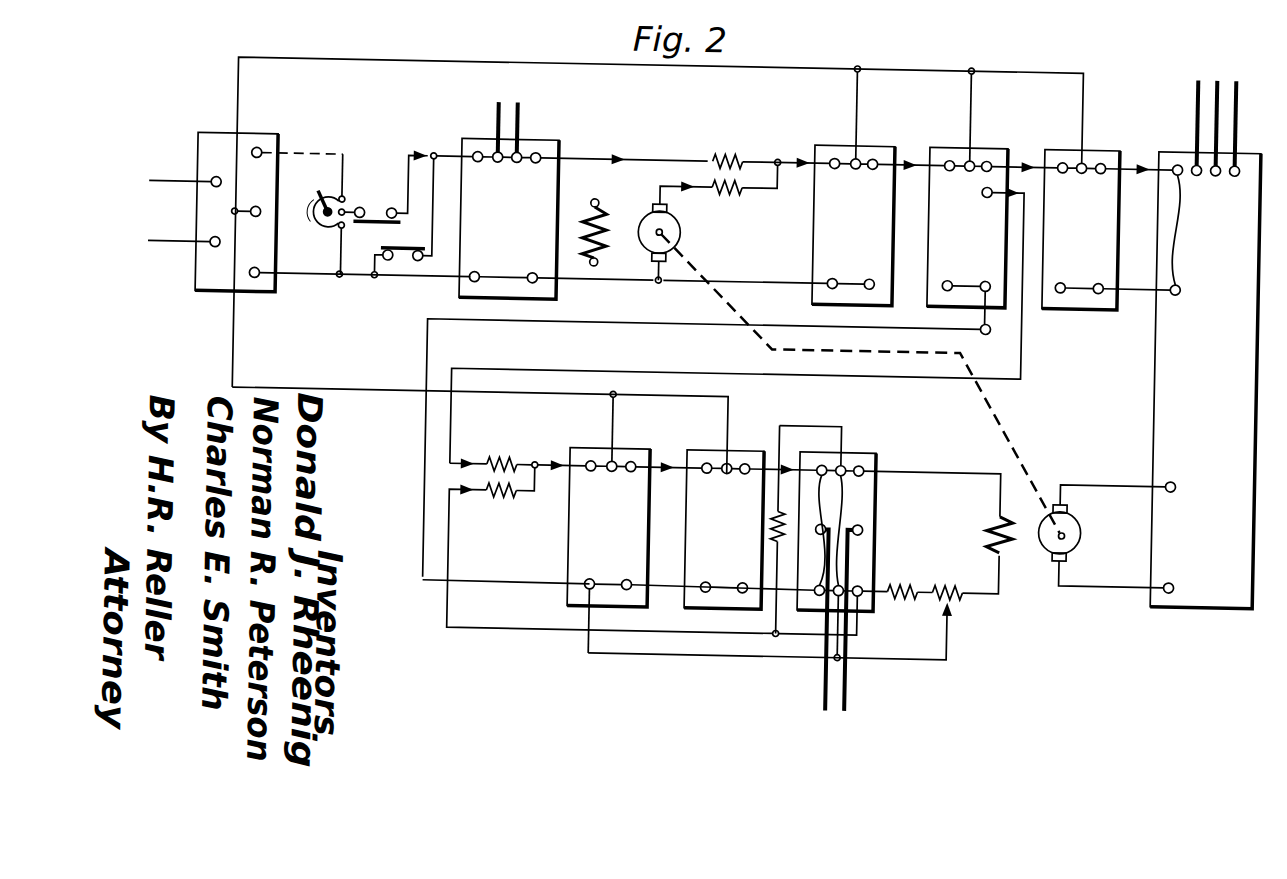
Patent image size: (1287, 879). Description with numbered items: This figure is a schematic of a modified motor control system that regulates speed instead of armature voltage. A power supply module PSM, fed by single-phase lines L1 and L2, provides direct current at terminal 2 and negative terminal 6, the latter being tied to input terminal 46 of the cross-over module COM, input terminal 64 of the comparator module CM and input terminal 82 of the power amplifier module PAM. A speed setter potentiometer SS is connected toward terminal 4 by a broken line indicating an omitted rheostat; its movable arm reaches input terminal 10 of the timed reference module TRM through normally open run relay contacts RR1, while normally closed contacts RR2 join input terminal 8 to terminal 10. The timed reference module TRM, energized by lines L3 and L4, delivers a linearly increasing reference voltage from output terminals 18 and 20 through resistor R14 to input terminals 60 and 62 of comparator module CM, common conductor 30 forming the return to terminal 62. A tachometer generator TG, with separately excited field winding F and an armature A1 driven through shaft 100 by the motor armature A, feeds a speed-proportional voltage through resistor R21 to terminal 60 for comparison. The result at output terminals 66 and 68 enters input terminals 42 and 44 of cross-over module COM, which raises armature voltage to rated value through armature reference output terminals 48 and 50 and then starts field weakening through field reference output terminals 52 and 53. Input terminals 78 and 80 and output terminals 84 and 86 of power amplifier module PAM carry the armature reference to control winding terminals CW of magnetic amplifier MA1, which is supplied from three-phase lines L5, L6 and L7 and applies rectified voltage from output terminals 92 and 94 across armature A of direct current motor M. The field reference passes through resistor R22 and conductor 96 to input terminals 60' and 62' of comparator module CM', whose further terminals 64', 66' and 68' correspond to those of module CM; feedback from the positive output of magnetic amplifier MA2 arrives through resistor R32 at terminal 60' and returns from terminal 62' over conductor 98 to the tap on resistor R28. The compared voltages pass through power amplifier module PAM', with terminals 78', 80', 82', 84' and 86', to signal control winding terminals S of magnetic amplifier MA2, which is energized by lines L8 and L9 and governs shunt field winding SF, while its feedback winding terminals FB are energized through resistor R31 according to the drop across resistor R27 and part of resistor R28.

The power supply module PSM is at (222, 138).
The power supply line L1 is at (168, 186).
The power supply line L2 is at (168, 247).
The direct current terminal 4 is at (251, 166).
The negative supply voltage output terminal 6 is at (251, 225).
The direct current terminal 2 is at (251, 278).
The speed setter potentiometer SS is at (358, 211).
The normally open run relay contacts RR1 is at (392, 184).
The normally closed run relay contacts RR2 is at (398, 253).
The timed reference module TRM is at (471, 141).
The input terminal 10 is at (475, 166).
The output terminal 18 is at (533, 166).
The power supply line L3 is at (490, 113).
The power supply line L4 is at (516, 115).
The input terminal 8 is at (474, 275).
The output terminal 20 is at (532, 276).
The common conductor 30 is at (586, 286).
The field winding F is at (579, 239).
The tachometer generator TG is at (627, 189).
The armature A1 is at (680, 228).
The shaft 100 is at (850, 355).
The resistor R14 is at (719, 157).
The resistor R21 is at (739, 199).
The comparator module CM is at (842, 214).
The input terminal 60 is at (829, 176).
The input terminal 64 is at (867, 146).
The output terminal 66 is at (874, 177).
The input terminal 62 is at (825, 271).
The output terminal 68 is at (873, 272).
The cross-over module COM is at (948, 137).
The input terminal 42 is at (943, 167).
The input terminal 46 is at (970, 166).
The output terminal 48 is at (987, 156).
The output terminal 52 is at (981, 192).
The input terminal 44 is at (948, 276).
The output terminal 50 is at (988, 276).
The output terminal 53 is at (988, 331).
The power amplifier module PAM is at (1070, 215).
The input terminal 78 is at (1057, 182).
The input terminal 82 is at (1094, 148).
The output terminal 86 is at (1102, 182).
The input terminal 80 is at (1053, 276).
The output terminal 84 is at (1100, 276).
The magnetic amplifier MA1 is at (1156, 370).
The control winding terminals CW is at (1172, 230).
The power supply line L5 is at (1192, 74).
The power supply line L6 is at (1222, 66).
The power supply line L7 is at (1234, 74).
The output terminal 92 is at (1176, 474).
The output terminal 94 is at (1176, 575).
The direct current motor M is at (1050, 490).
The armature A is at (1083, 514).
The conductor 96 is at (428, 454).
The resistor R22 is at (492, 459).
The resistor R32 is at (496, 504).
The comparator module CM' is at (597, 515).
The input terminal 60' is at (584, 480).
The terminal 64' is at (626, 446).
The terminal 66' is at (631, 480).
The input terminal 62' is at (581, 604).
The terminal 68' is at (625, 572).
The power amplifier module PAM' is at (711, 516).
The terminal 78' is at (706, 482).
The terminal 82' is at (740, 447).
The terminal 86' is at (748, 483).
The terminal 80' is at (697, 576).
The terminal 84' is at (742, 577).
The resistor R31 is at (776, 533).
The magnetic amplifier MA2 is at (878, 458).
The signal control winding terminals S is at (814, 592).
The feedback winding terminals FB is at (846, 594).
The power supply line L8 is at (823, 716).
The power supply line L9 is at (854, 716).
The conductor 98 is at (716, 660).
The resistor R27 is at (888, 581).
The resistor R28 is at (950, 581).
The shunt field winding SF is at (1006, 547).